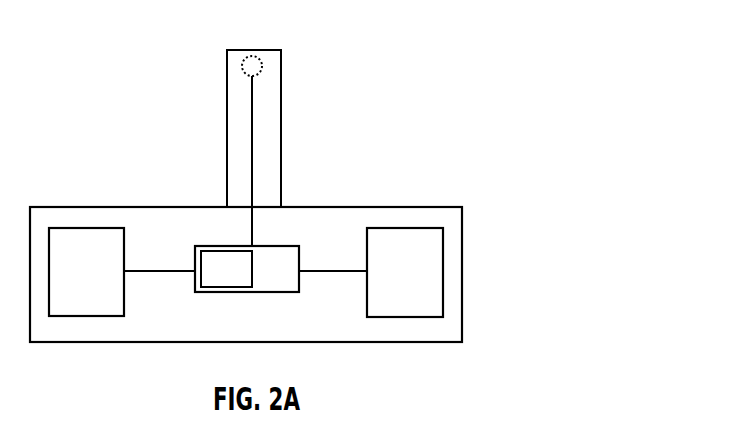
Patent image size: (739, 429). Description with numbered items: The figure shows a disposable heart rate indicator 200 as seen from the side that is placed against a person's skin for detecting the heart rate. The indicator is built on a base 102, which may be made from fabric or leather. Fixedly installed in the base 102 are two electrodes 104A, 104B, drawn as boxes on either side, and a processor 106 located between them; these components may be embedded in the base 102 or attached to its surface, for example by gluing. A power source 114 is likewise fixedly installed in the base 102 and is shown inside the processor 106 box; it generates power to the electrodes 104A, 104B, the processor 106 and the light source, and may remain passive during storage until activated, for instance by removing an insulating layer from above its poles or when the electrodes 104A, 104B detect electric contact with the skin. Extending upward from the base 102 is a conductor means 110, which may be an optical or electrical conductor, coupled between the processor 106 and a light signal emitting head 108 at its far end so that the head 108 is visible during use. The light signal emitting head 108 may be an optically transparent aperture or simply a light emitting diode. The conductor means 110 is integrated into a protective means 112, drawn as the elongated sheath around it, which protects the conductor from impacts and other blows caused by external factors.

The disposable heart rate indicator 200 is at (374, 98).
The base 102 is at (368, 207).
The electrode 104A is at (102, 262).
The electrode 104B is at (418, 266).
The processor 106 is at (296, 286).
The light signal emitting head 108 is at (250, 56).
The conductor means 110 is at (253, 157).
The protective means 112 is at (227, 97).
The power source 114 is at (238, 282).